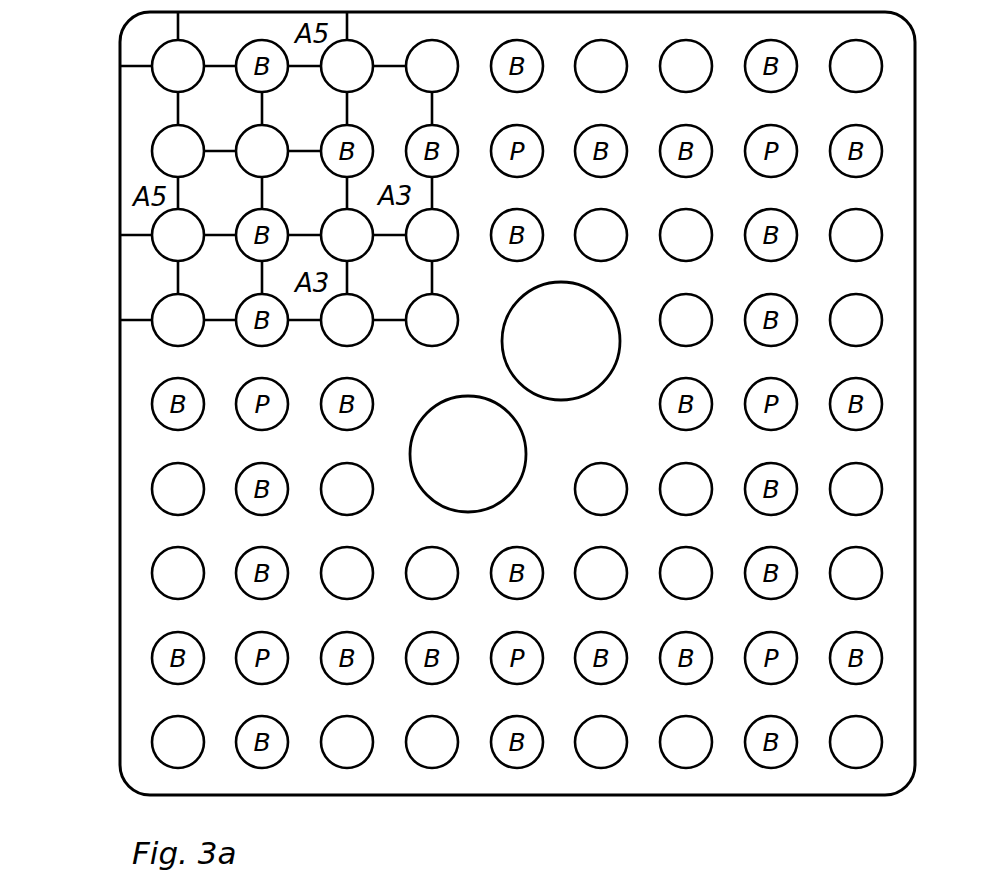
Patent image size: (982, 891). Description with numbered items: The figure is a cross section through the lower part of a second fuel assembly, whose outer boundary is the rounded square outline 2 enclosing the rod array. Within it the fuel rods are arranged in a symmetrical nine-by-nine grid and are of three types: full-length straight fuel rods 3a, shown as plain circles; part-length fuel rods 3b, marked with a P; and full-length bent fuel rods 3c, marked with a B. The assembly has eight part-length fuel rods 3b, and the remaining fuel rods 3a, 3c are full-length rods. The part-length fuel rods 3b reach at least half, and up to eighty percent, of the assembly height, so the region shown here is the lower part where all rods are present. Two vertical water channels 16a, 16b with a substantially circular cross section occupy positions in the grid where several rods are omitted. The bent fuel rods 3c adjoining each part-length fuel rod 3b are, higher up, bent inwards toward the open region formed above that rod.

The substrate / package 2 is at (118, 298).
The full-length straight fuel rod 3a is at (163, 233).
The part-length fuel rod 3b is at (253, 141).
The full-length bent fuel rod 3c is at (158, 148).
The vertical water channel 16a is at (486, 490).
The vertical water channel 16b is at (580, 308).